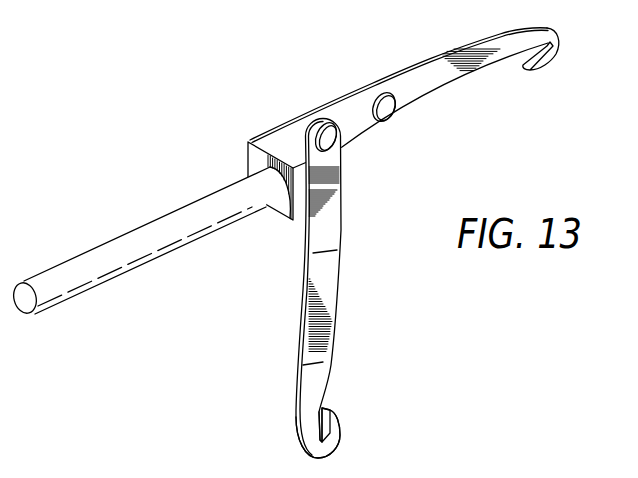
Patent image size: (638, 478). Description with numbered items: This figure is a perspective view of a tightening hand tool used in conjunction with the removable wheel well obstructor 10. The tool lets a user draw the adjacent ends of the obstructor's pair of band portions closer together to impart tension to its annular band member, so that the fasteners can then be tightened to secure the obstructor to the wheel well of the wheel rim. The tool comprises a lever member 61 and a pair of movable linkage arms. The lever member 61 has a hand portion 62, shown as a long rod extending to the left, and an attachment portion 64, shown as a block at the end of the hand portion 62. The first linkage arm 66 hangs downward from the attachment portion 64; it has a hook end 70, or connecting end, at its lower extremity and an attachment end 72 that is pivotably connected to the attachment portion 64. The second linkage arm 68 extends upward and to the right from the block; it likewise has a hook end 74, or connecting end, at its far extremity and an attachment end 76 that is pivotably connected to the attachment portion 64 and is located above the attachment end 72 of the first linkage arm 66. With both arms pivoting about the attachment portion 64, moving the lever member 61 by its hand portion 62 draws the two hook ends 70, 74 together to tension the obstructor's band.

The removable wheel well obstructor 10 is at (120, 142).
The lever member 61 is at (232, 237).
The hand portion 62 is at (105, 253).
The attachment portion 64 is at (284, 140).
The first linkage arm 66 is at (330, 277).
The second linkage arm 68 is at (490, 48).
The hook end 70 is at (333, 430).
The attachment end 72 is at (327, 138).
The hook end 74 is at (538, 65).
The attachment end 76 is at (383, 100).